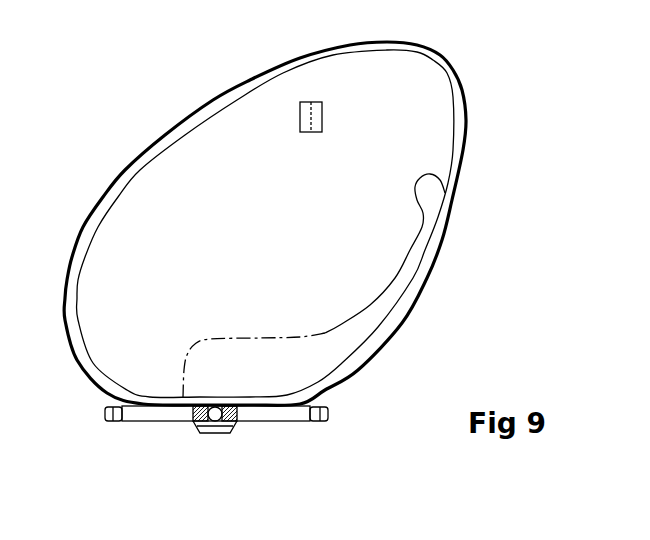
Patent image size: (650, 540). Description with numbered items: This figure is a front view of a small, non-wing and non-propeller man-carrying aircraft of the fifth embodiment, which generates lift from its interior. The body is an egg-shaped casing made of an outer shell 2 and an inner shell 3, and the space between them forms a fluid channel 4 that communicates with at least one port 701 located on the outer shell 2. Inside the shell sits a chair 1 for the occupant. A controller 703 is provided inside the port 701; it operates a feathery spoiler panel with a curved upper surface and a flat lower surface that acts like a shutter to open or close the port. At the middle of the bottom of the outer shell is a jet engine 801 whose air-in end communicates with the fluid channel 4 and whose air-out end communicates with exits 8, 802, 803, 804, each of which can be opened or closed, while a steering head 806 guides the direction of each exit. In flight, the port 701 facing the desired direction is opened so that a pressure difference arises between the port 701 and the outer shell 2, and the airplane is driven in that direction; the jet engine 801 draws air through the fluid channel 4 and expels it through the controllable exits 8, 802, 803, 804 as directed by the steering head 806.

The chair 1 is at (433, 188).
The outer shell 2 is at (409, 44).
The inner shell 3 is at (438, 65).
The fluid channel 4 is at (453, 82).
The first port 701 is at (300, 128).
The controller 703 is at (308, 102).
The port 8 is at (225, 431).
The jet engine 801 is at (200, 425).
The port 802 is at (330, 414).
The port 803 is at (197, 418).
The port 804 is at (107, 417).
The steering head 806 is at (122, 423).